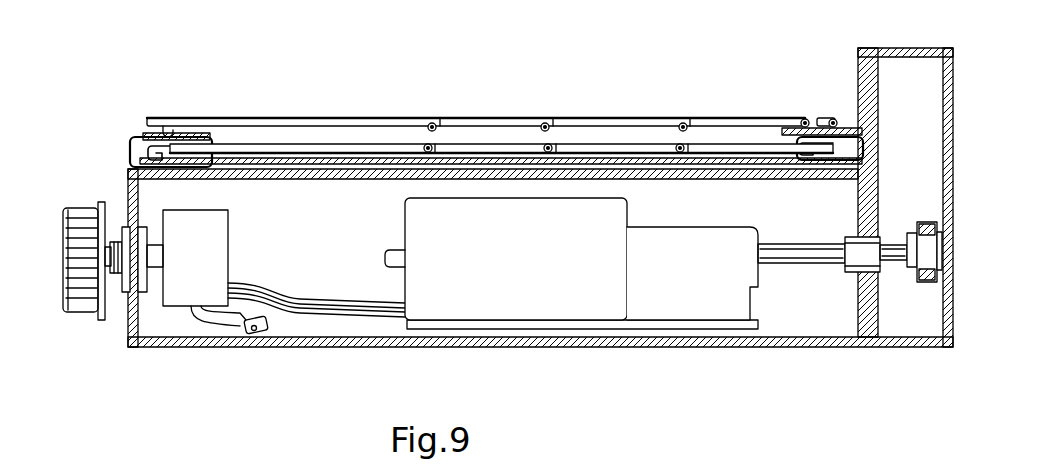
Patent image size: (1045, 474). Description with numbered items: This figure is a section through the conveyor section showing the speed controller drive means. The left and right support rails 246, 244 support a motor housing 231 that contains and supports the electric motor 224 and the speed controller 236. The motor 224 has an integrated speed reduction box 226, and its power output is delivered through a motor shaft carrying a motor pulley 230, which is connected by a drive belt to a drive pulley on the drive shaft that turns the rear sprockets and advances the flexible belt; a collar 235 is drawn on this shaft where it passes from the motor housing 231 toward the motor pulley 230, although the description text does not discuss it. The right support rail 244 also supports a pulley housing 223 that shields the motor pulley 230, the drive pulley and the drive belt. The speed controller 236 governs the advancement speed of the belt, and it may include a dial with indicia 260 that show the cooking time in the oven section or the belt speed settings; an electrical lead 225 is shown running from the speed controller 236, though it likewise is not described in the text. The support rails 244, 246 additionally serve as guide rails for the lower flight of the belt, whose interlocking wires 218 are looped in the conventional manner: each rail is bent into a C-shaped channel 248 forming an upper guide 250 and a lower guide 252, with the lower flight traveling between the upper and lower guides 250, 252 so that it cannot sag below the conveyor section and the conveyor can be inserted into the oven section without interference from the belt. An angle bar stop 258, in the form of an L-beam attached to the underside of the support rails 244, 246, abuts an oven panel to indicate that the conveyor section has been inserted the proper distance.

The interlocking wires 218 is at (470, 90).
The pulley housing 223 is at (905, 48).
The electric motor 224 is at (523, 306).
The electrical lead and connector 225 is at (257, 332).
The speed reduction box 226 is at (627, 302).
The motor pulley 230 is at (918, 282).
The motor housing 231 is at (712, 338).
The shaft coupling collar 235 is at (853, 272).
The speed controller 236 is at (192, 300).
The right support rail 244 is at (790, 128).
The left support rail 246 is at (130, 150).
The C-shaped channel 248 is at (148, 155).
The upper guide 250 is at (170, 124).
The lower guide 252 is at (205, 164).
The angle bar stop 258 is at (150, 133).
The indicia 260 is at (103, 320).